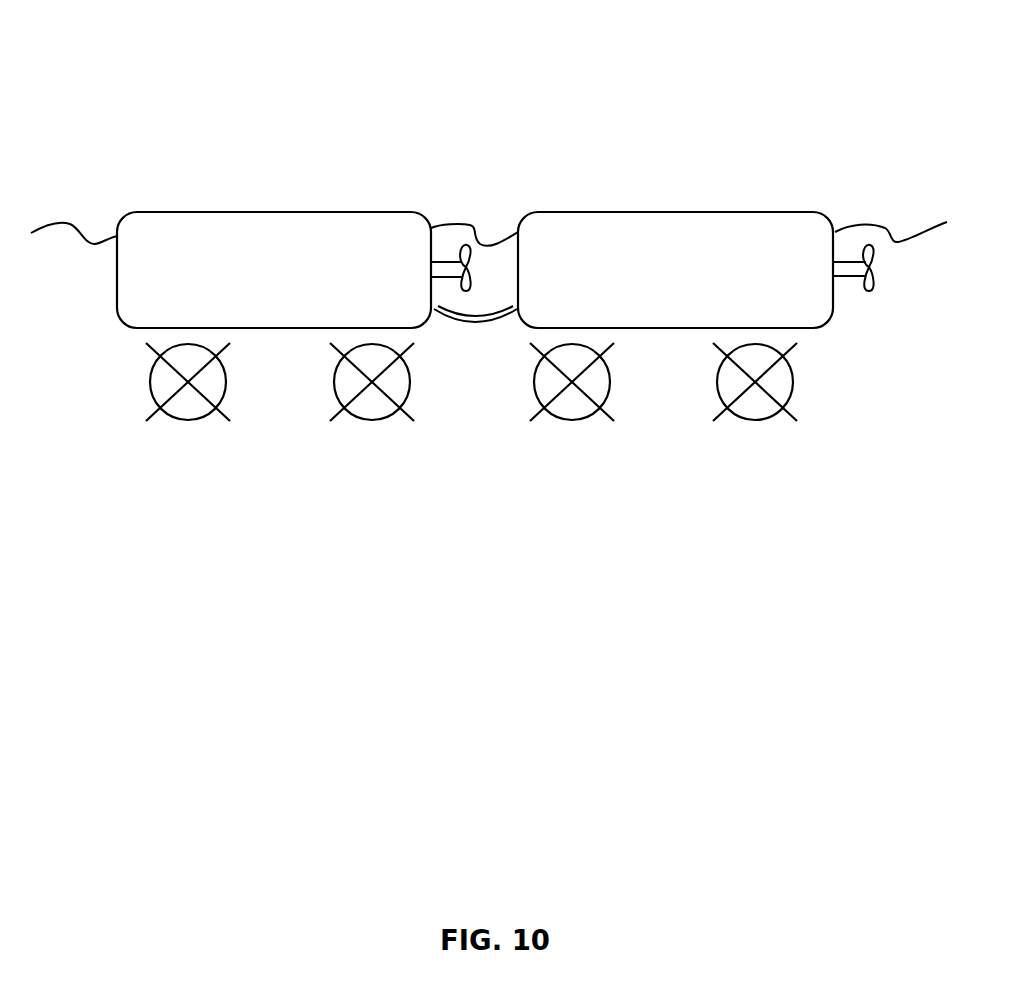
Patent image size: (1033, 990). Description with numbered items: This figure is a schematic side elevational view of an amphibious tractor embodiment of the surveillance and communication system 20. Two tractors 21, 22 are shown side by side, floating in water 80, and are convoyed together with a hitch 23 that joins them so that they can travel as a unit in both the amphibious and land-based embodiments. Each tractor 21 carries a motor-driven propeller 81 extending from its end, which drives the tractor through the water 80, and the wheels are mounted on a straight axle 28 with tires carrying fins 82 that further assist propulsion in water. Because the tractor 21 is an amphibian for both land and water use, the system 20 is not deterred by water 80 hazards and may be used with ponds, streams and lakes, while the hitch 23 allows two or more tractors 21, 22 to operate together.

The system 20 is at (447, 62).
The tractor 21 is at (285, 212).
The second hull 22 is at (680, 212).
The hitch 23 is at (470, 323).
The straight axle 28 is at (368, 398).
The water 80 is at (78, 268).
The propeller 81 is at (470, 266).
The fins 82 is at (152, 418).